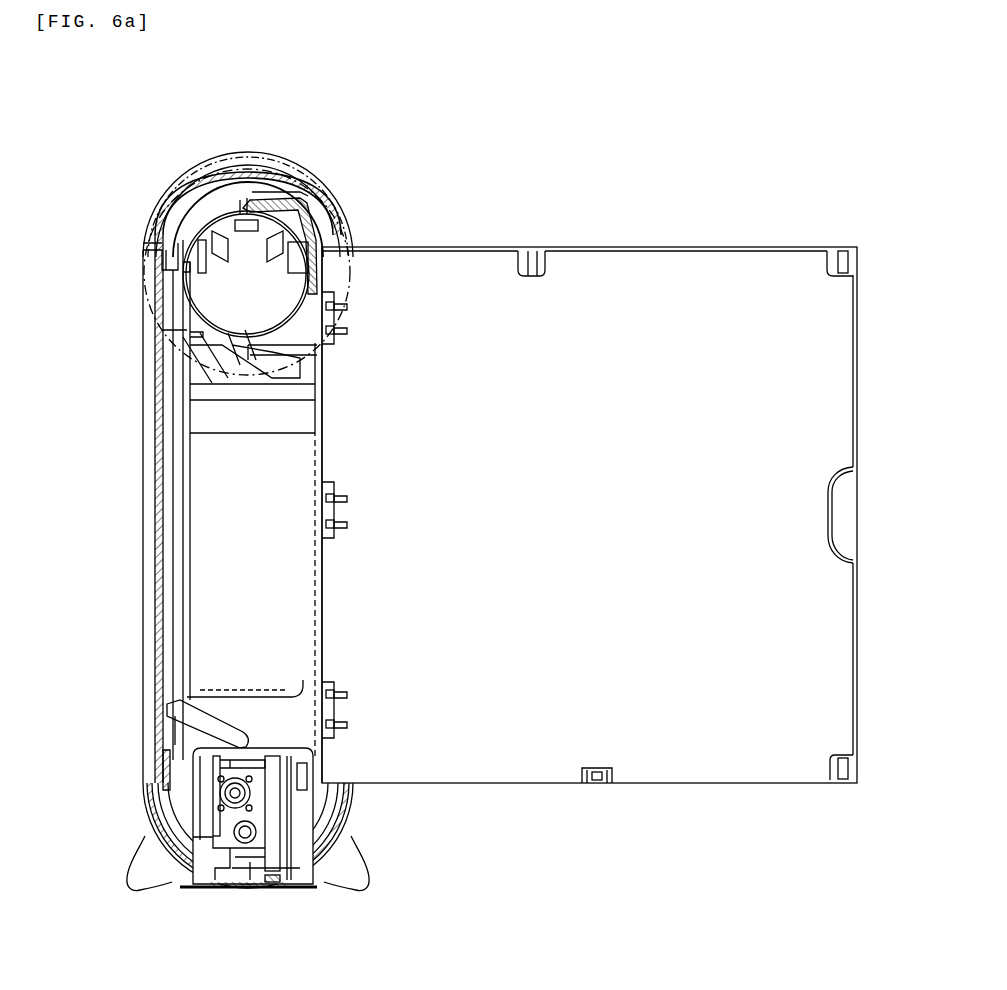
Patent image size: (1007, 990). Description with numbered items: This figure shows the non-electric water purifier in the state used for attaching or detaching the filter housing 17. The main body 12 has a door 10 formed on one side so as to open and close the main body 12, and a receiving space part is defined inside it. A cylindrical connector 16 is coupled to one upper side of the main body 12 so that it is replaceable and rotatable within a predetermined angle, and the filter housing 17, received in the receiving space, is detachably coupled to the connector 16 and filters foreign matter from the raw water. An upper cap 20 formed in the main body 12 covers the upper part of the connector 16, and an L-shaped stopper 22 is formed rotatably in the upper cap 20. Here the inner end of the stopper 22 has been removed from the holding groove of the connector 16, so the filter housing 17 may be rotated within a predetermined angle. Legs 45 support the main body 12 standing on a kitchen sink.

The door 10 is at (696, 788).
The main body 12 is at (135, 560).
The connector 16 is at (237, 277).
The filter housing 17 is at (228, 490).
The upper cap 20 is at (267, 160).
The stopper 22 is at (310, 208).
The legs 45 is at (358, 873).